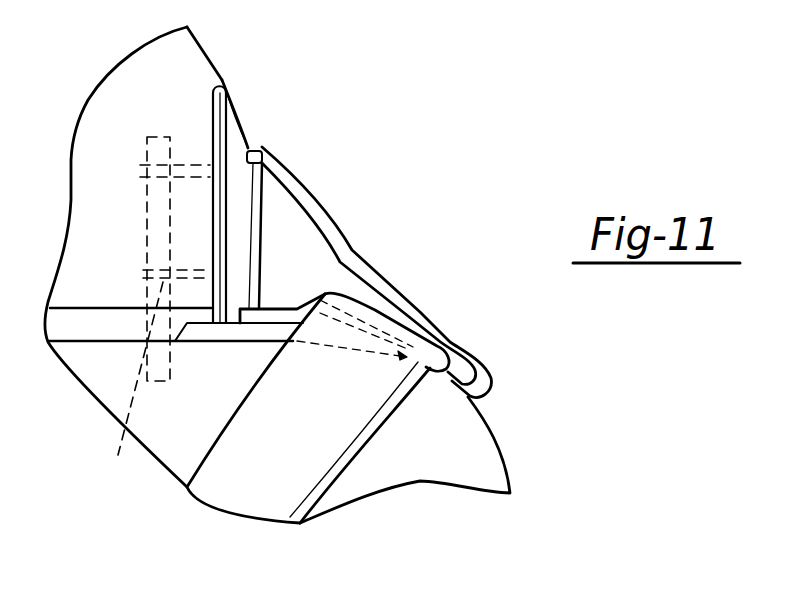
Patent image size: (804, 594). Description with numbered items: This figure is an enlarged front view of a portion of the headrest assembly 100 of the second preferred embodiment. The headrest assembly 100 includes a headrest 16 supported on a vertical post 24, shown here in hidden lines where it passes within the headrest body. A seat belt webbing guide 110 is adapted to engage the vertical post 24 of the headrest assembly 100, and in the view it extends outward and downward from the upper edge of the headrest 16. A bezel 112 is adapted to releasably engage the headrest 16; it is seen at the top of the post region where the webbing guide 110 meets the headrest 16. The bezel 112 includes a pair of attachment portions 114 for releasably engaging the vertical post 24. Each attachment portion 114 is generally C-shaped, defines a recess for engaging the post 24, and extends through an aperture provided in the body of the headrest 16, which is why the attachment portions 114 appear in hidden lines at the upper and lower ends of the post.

The headrest 16 is at (223, 75).
The vertical post 24 is at (147, 152).
The headrest assembly 100 is at (480, 171).
The seat belt webbing guide 110 is at (353, 249).
The bezel 112 is at (250, 135).
The attachment portion 114 is at (188, 165).